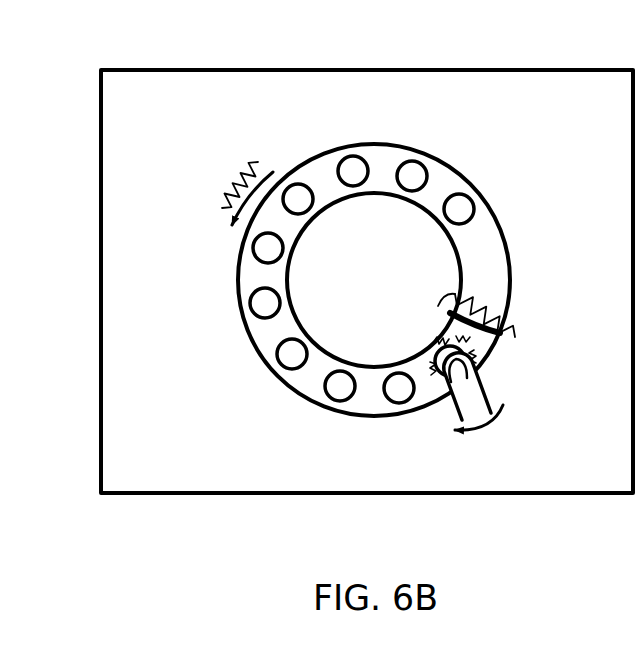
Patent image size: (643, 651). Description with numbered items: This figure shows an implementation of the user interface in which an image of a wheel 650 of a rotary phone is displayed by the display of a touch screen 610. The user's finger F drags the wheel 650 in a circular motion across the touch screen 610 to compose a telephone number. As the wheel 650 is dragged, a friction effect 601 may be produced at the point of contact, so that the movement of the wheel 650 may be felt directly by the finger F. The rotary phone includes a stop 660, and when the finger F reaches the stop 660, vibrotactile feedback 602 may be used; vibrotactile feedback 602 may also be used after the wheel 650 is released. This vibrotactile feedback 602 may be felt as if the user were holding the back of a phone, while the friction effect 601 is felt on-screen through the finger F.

The touch screen 610 is at (590, 126).
The wheel 650 is at (333, 128).
The friction effect 601 is at (431, 338).
The stop 660 is at (498, 338).
The vibrotactile feedback 602 is at (230, 173).
The user's finger F is at (453, 407).